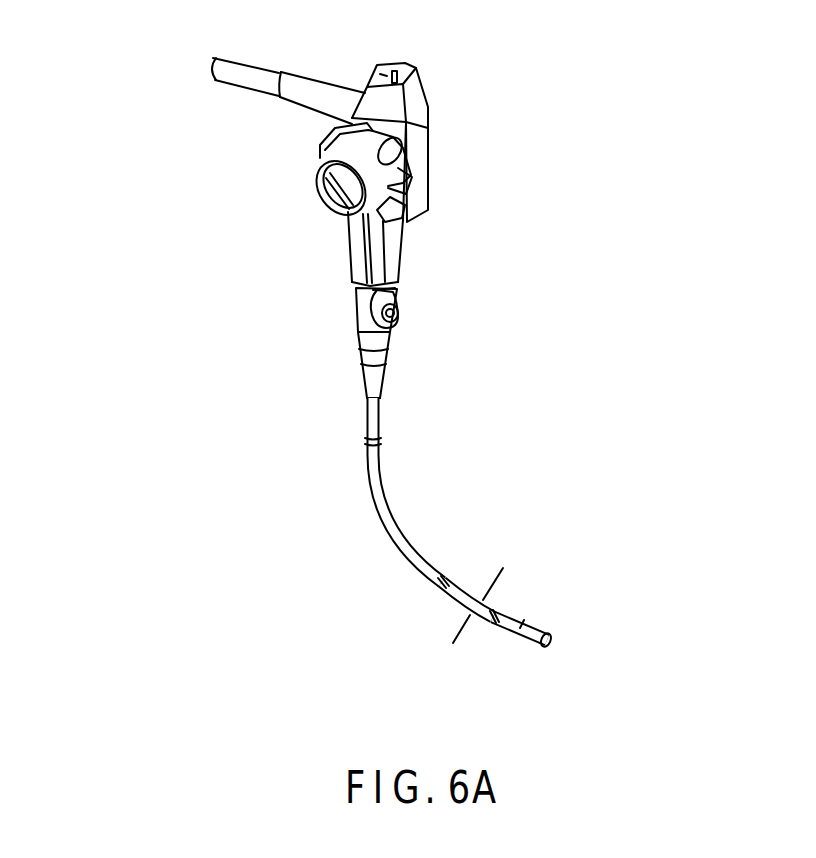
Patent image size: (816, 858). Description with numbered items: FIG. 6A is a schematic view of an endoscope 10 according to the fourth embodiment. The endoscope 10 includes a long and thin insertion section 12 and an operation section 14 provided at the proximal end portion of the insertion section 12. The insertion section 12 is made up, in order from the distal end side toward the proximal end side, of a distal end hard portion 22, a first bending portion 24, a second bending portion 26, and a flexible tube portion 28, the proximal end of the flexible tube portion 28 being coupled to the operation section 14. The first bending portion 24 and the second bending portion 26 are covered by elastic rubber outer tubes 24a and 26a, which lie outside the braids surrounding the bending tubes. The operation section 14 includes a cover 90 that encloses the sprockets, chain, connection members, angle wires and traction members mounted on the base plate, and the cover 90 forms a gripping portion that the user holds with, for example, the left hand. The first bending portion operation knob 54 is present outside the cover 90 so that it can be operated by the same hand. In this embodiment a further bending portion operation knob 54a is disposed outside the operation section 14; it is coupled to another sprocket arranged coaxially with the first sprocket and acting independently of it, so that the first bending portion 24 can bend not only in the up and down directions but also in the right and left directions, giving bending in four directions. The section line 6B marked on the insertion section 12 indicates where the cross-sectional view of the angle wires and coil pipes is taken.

The endoscope 10 is at (572, 216).
The insertion section 12 is at (483, 541).
The operation section 14 is at (308, 293).
The distal end hard portion 22 is at (547, 633).
The first bending portion 24 is at (513, 613).
The outer tube 24a is at (514, 633).
The second bending portion 26 is at (470, 597).
The outer tube 26a is at (447, 594).
The flexible tube portion 28 is at (377, 422).
The first bending portion operation knob 54 is at (326, 138).
The bending portion operation knob 54a is at (320, 163).
The cover 90 is at (405, 250).
The section line VIB-VIB 6B is at (491, 574).